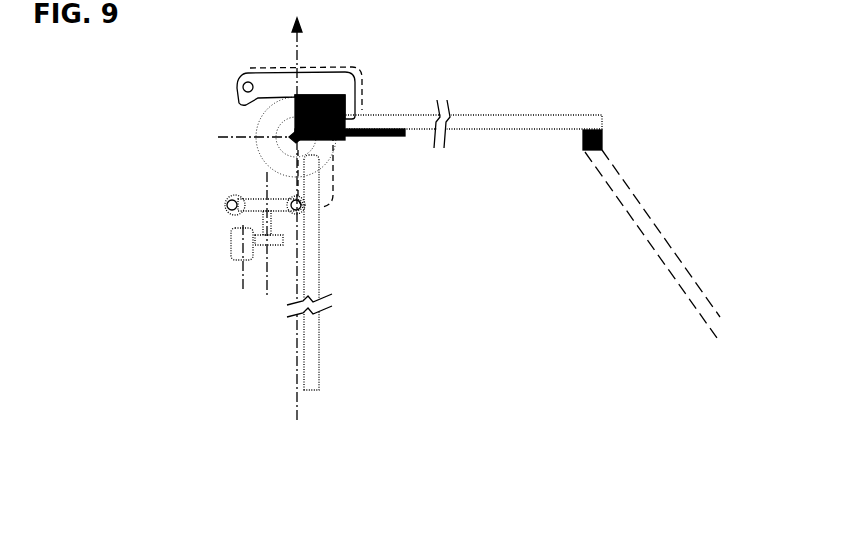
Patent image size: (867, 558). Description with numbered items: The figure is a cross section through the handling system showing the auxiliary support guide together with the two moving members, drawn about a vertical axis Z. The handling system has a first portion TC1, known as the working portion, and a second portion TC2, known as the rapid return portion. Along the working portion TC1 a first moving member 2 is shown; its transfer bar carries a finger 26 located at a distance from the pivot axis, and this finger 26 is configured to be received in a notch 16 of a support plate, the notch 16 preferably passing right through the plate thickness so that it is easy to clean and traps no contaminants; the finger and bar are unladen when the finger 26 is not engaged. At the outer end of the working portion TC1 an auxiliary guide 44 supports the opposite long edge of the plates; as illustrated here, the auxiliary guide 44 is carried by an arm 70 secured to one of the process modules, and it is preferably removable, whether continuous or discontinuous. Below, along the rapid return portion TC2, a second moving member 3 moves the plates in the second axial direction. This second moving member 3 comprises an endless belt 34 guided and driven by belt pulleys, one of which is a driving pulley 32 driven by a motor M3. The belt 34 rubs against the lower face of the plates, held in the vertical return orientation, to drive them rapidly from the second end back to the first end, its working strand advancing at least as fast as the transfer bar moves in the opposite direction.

The first moving member 2 is at (218, 75).
The second moving member 3 is at (228, 222).
The notch 16 is at (352, 136).
The finger 26 is at (357, 110).
The driving pulley 32 is at (255, 195).
The endless belt 34 is at (223, 205).
The auxiliary guide 44 is at (606, 141).
The arm 70 is at (667, 248).
The motor M3 is at (230, 246).
The first portion TC1 is at (485, 98).
The second portion TC2 is at (250, 339).
The vertical axis Z is at (262, 210).